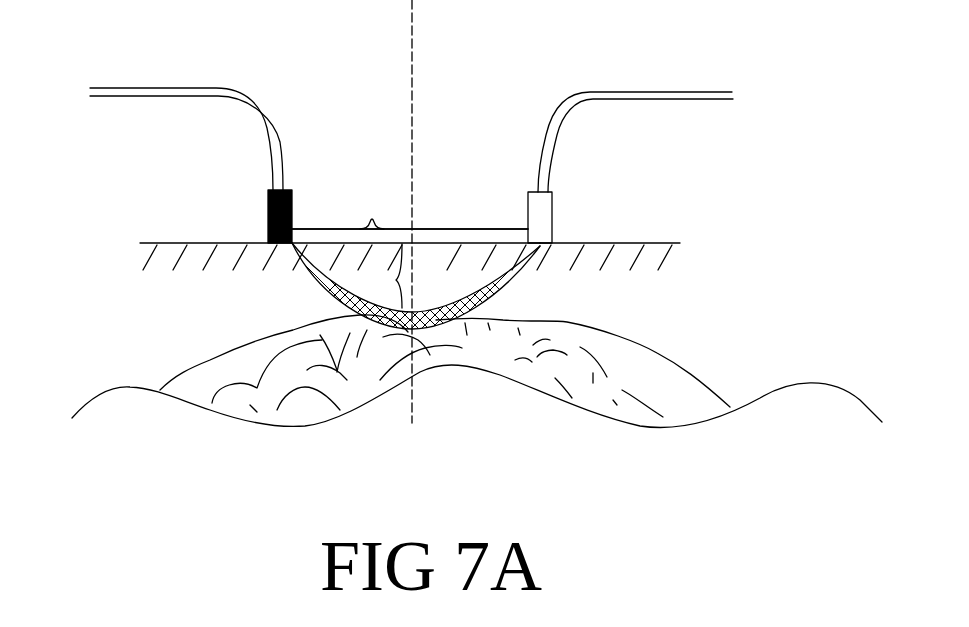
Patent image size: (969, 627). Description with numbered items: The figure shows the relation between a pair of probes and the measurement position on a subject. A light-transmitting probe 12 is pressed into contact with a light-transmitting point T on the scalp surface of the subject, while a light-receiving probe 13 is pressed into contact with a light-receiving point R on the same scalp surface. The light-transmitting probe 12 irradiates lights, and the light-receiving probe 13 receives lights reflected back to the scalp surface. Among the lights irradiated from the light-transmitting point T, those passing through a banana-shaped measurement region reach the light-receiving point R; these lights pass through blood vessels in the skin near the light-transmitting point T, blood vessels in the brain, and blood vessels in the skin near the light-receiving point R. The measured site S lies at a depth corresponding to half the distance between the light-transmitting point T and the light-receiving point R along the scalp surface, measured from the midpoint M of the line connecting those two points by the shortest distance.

The light-transmitting probe 12 is at (270, 203).
The light-receiving probe 13 is at (554, 204).
The light-transmitting point T is at (262, 237).
The light-receiving point R is at (553, 238).
The midpoint M is at (418, 234).
The site S is at (437, 318).
The electrode spacing L is at (410, 210).